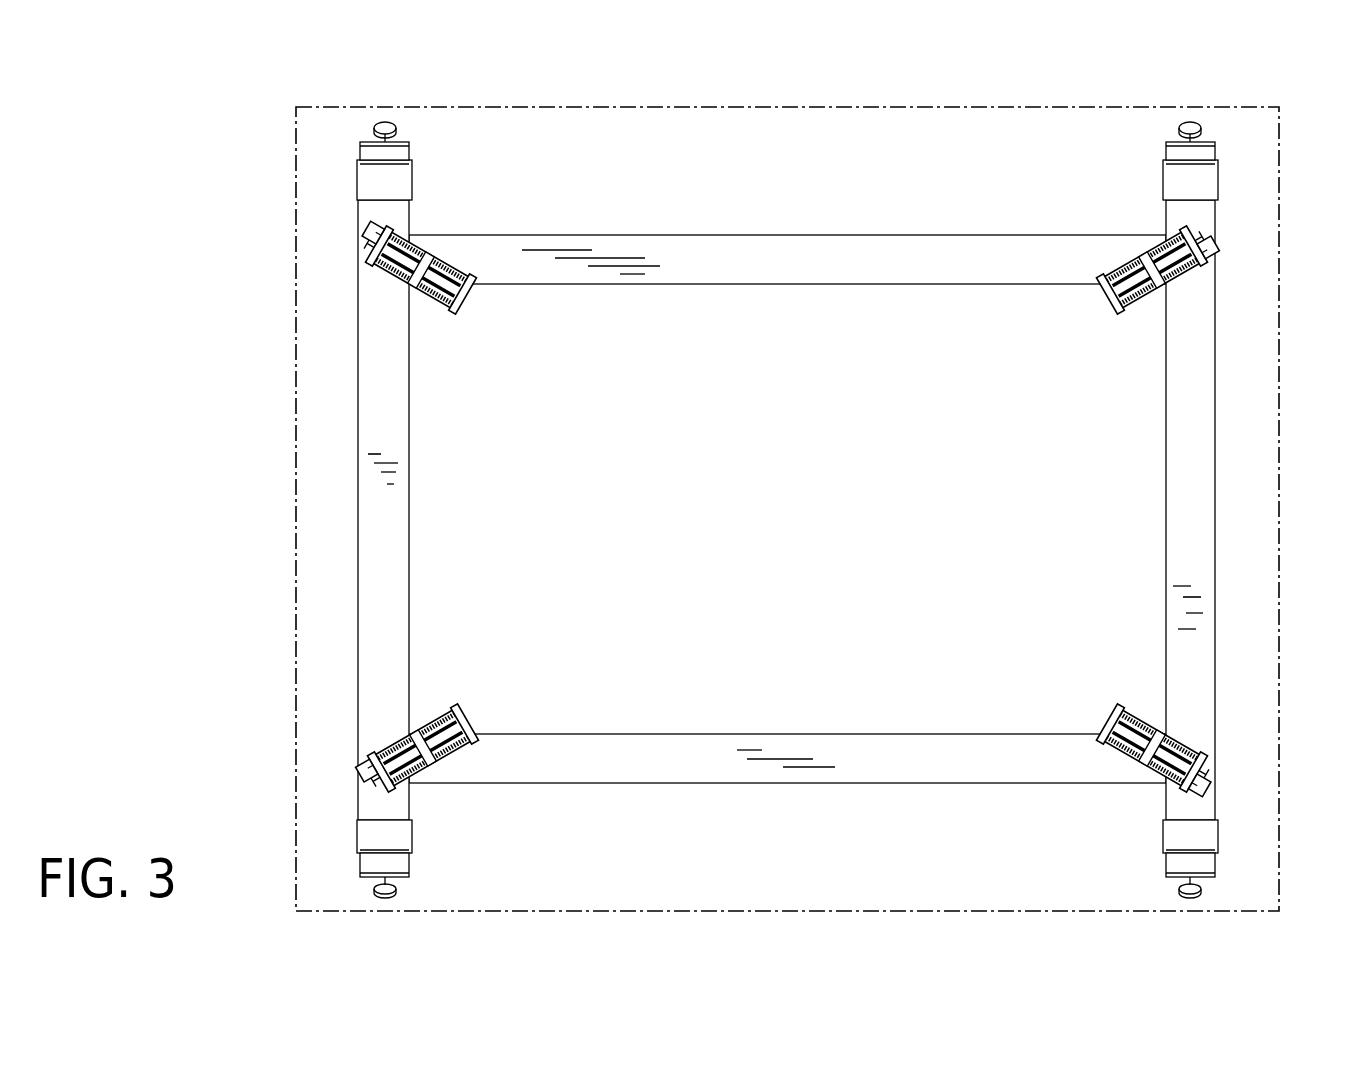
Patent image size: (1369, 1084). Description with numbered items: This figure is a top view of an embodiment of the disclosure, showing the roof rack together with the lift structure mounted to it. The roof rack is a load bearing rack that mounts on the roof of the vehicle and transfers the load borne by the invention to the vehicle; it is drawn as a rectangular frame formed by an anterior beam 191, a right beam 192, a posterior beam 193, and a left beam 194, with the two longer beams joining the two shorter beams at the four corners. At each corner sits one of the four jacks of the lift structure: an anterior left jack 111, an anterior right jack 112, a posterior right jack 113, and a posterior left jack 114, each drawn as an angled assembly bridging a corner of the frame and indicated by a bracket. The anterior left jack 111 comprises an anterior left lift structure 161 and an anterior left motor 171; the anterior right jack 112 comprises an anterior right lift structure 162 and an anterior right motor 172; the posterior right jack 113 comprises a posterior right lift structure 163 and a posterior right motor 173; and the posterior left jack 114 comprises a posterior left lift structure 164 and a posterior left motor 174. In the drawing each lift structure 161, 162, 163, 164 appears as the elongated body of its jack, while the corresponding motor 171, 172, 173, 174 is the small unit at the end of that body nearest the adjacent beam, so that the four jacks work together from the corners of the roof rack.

The anterior left jack 111 is at (488, 831).
The anterior right jack 112 is at (522, 176).
The posterior right jack 113 is at (1229, 292).
The posterior left jack 114 is at (1084, 836).
The anterior left lift structure 161 is at (460, 762).
The anterior right lift structure 162 is at (458, 253).
The posterior right lift structure 163 is at (1148, 287).
The posterior left lift structure 164 is at (1135, 755).
The anterior left motor 171 is at (429, 810).
The anterior right motor 172 is at (442, 181).
The posterior right motor 173 is at (1200, 248).
The posterior left motor 174 is at (1141, 827).
The anterior beam 191 is at (409, 523).
The right beam 192 is at (720, 284).
The posterior beam 193 is at (1167, 487).
The left beam 194 is at (777, 734).